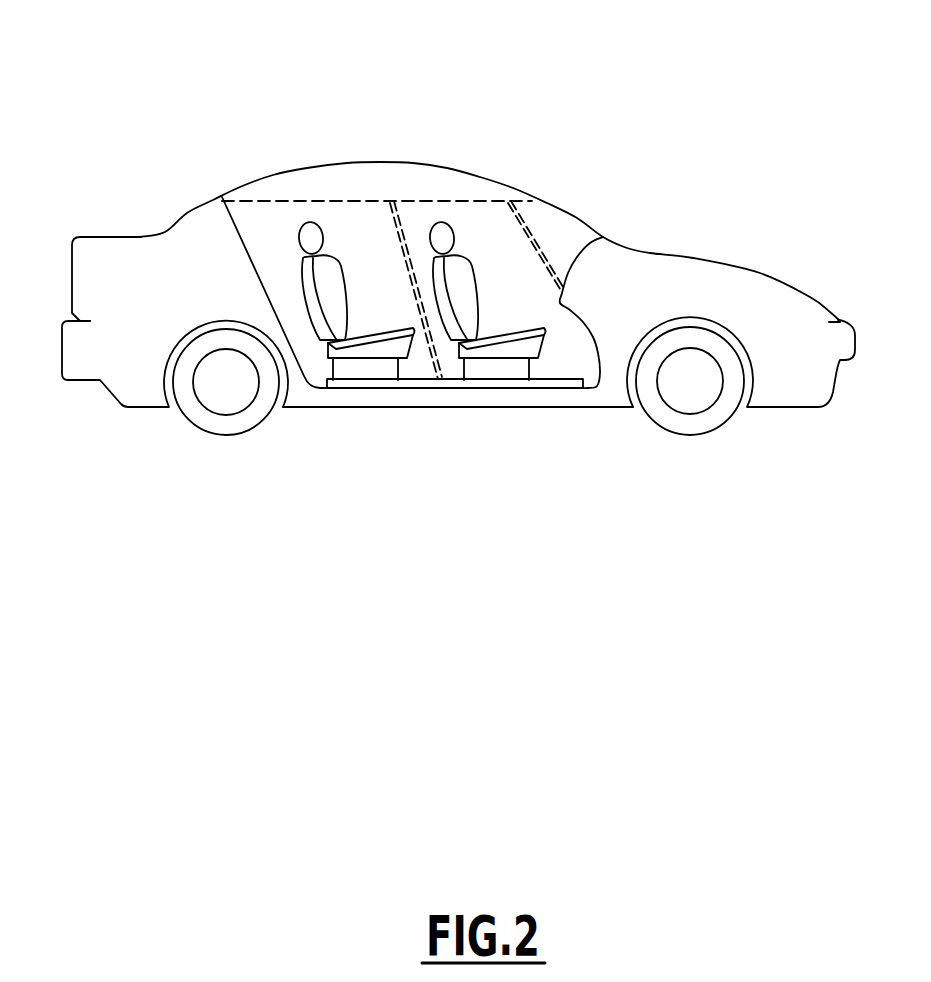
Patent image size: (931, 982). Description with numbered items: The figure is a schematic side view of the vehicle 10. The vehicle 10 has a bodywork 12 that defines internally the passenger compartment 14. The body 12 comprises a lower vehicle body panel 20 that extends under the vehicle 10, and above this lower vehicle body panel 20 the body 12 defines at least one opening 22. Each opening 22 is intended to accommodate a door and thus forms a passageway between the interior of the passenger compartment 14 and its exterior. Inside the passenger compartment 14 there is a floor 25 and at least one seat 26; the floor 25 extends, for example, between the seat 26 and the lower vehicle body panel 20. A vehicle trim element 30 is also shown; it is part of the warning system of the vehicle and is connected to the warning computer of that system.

The vehicle 10 is at (192, 118).
The bodywork 12 is at (100, 232).
The passenger compartment 14 is at (486, 250).
The lower vehicle body panel 20 is at (362, 397).
The opening 22 is at (273, 263).
The floor 25 is at (453, 383).
The seat 26 is at (502, 347).
The vehicle trim element 30 is at (408, 388).